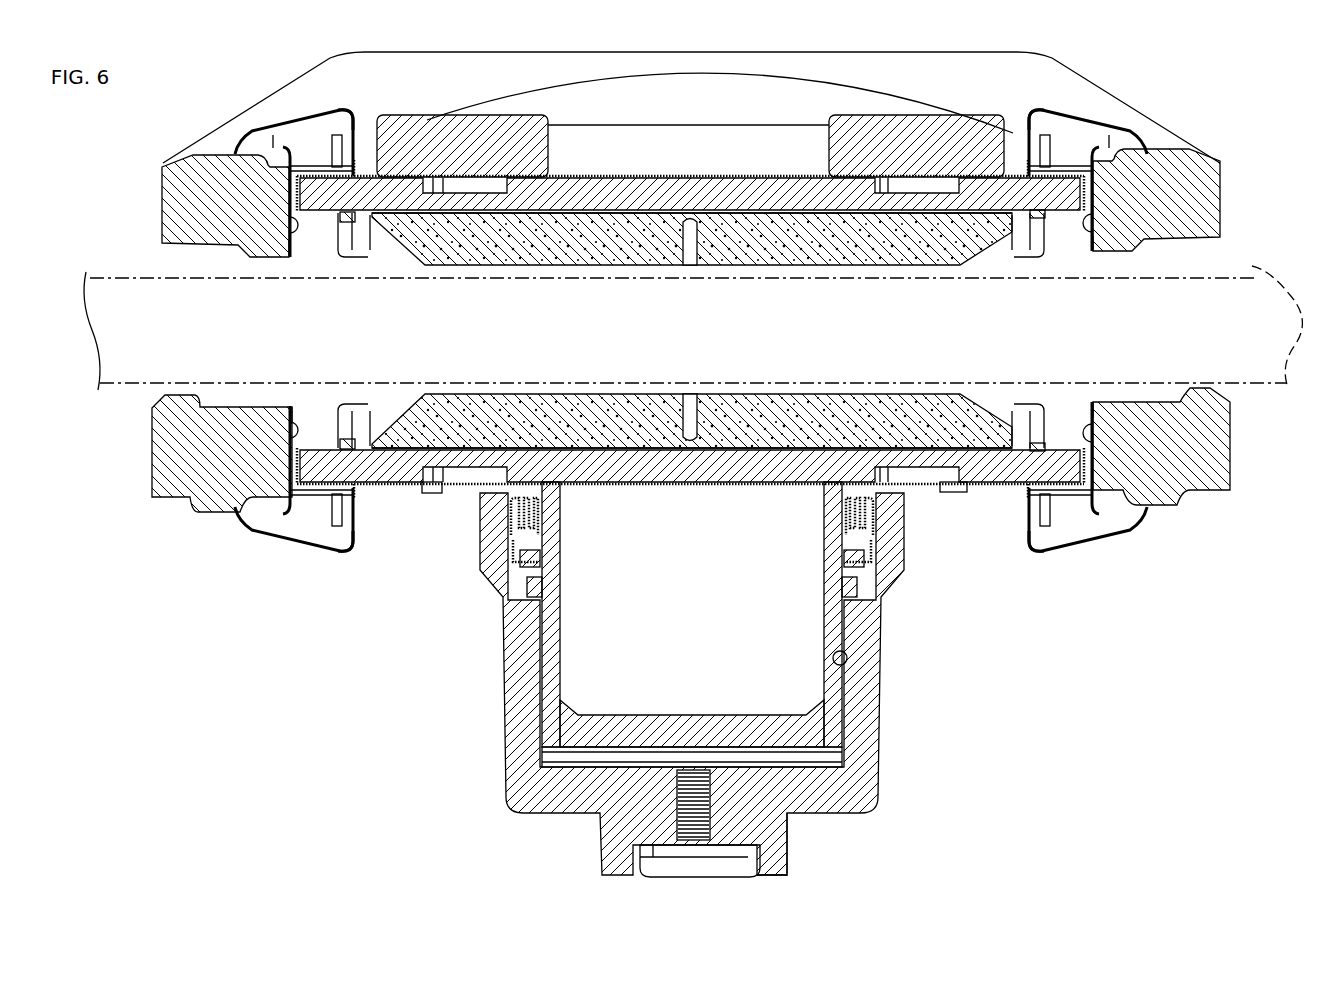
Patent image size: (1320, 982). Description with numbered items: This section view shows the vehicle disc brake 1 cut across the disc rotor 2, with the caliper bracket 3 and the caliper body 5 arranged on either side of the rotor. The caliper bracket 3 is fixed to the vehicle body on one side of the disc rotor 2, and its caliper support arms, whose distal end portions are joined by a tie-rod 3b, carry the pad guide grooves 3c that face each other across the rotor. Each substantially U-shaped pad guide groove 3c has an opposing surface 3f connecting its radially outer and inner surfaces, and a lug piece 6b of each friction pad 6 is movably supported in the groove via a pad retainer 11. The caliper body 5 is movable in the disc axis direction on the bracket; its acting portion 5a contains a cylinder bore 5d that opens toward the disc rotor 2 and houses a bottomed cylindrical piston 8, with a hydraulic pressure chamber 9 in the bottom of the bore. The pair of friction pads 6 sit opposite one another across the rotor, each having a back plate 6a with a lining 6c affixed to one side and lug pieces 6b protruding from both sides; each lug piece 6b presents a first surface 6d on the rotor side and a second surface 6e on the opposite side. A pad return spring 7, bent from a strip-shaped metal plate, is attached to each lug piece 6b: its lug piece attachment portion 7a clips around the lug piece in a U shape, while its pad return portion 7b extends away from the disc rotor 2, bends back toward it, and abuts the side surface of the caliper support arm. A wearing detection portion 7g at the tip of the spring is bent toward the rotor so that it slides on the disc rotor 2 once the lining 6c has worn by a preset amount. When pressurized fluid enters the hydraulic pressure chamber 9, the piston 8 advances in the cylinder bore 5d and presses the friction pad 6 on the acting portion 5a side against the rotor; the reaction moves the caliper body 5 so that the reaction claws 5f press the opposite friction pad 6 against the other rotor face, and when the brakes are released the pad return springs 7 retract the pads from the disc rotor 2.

The vehicle disc brake 1 is at (678, 30).
The disc rotor 2 is at (1258, 268).
The caliper bracket 3 is at (1232, 180).
The tie-rod 3b is at (785, 60).
The pad guide groove 3c is at (302, 247).
The opposing surface 3f is at (292, 232).
The caliper body 5 is at (667, 685).
The acting portion 5a is at (822, 800).
The cylinder bore 5d is at (848, 655).
The reaction claws 5f is at (456, 130).
The friction pad 6 is at (692, 383).
The back plate 6a is at (603, 208).
The lug piece 6b is at (287, 196).
The lining 6c is at (650, 243).
The first surface 6d is at (357, 220).
The second surface 6e is at (356, 168).
The pad return spring 7 is at (245, 126).
The lug piece attachment portion 7a is at (313, 158).
The pad return portion 7b is at (338, 108).
The wearing detection portion 7g is at (350, 230).
The piston 8 is at (552, 635).
The hydraulic pressure chamber 9 is at (627, 755).
The pad retainer 11 is at (353, 232).